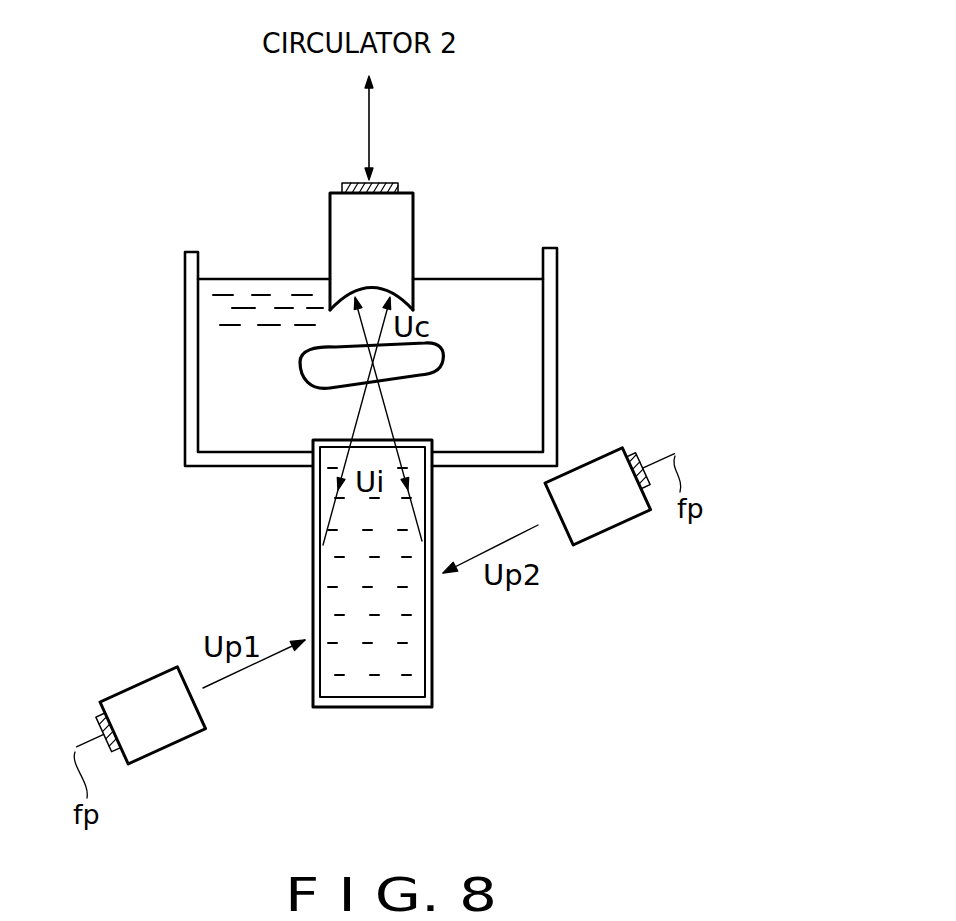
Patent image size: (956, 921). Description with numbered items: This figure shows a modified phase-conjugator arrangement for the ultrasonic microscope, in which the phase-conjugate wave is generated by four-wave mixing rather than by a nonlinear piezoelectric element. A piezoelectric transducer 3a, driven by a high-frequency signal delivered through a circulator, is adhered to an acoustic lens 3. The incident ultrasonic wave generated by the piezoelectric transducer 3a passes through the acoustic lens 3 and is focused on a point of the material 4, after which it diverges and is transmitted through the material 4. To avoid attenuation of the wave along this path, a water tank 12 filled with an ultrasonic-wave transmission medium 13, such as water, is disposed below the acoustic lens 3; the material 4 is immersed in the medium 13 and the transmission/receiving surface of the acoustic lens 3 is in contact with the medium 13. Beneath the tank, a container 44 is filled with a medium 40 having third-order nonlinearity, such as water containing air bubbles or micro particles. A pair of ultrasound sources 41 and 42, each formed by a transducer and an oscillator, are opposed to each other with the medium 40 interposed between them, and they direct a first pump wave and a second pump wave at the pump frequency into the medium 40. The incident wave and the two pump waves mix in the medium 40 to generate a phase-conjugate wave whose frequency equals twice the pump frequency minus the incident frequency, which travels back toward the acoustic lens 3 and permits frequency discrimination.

The acoustic lens 3 is at (414, 202).
The piezoelectric transducer 3a is at (400, 183).
The material 4 is at (444, 362).
The water tank 12 is at (558, 284).
The ultrasonic-wave transmission medium 13 is at (495, 290).
The medium having the third-order nonlinearity 40 is at (413, 688).
The ultrasound source 41 is at (135, 688).
The ultrasound source 42 is at (603, 465).
The container 44 is at (370, 698).